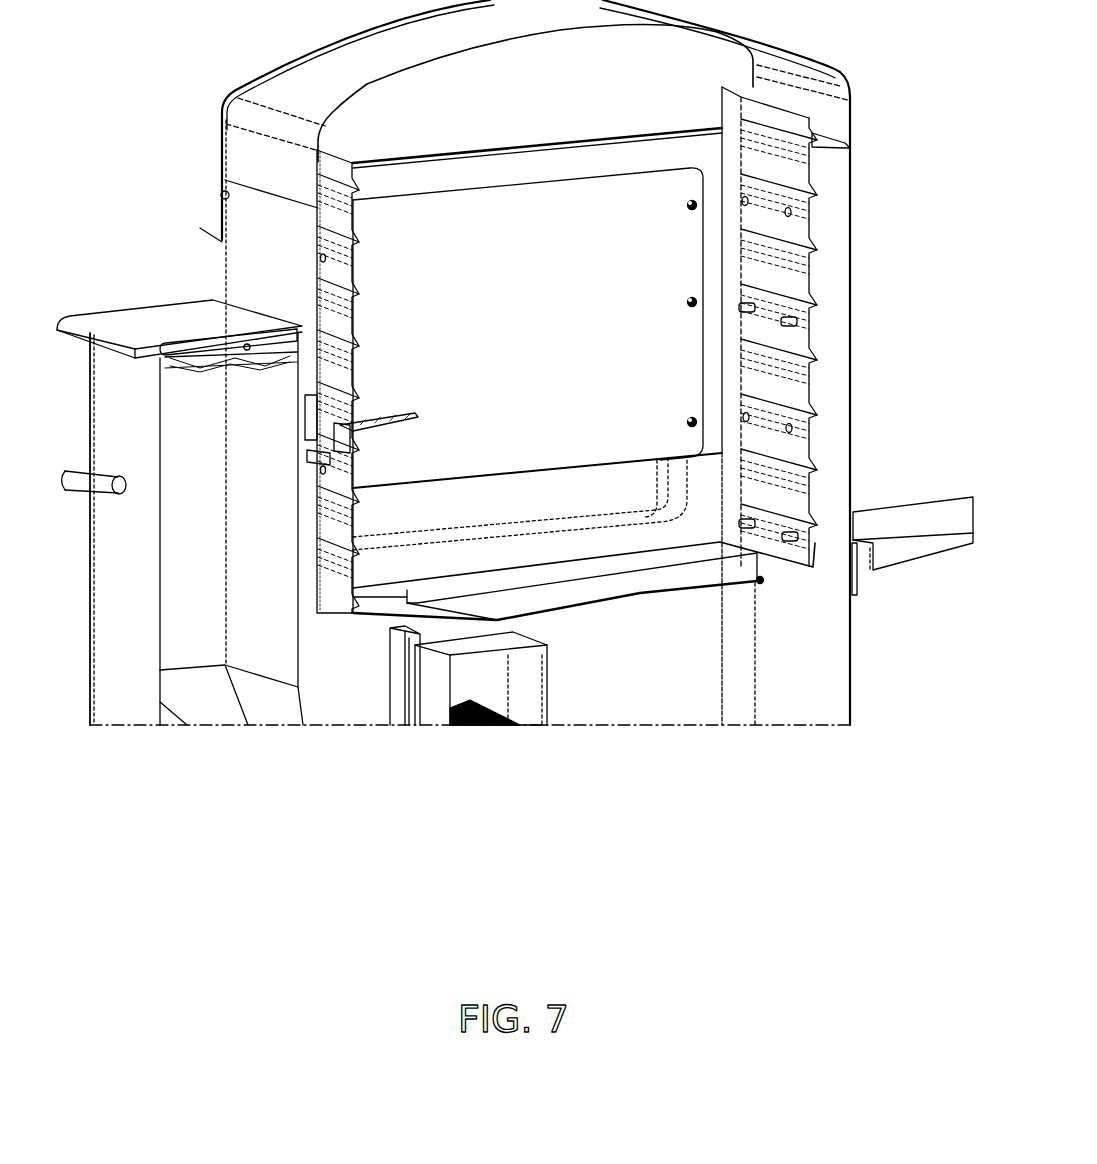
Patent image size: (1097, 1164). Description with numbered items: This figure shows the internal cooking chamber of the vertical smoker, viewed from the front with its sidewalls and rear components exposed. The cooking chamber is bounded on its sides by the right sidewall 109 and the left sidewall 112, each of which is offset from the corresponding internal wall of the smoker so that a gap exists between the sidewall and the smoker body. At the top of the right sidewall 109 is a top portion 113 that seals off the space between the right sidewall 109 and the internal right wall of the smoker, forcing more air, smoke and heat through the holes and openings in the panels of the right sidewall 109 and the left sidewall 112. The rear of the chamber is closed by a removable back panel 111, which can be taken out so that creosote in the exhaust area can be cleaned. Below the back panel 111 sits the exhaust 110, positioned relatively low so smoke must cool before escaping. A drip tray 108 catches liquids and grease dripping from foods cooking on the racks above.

The drip tray 108 is at (755, 562).
The right sidewall 109 is at (810, 343).
The exhaust 110 is at (513, 482).
The back panel 111 is at (557, 353).
The left sidewall 112 is at (327, 315).
The top portion 113 is at (853, 148).